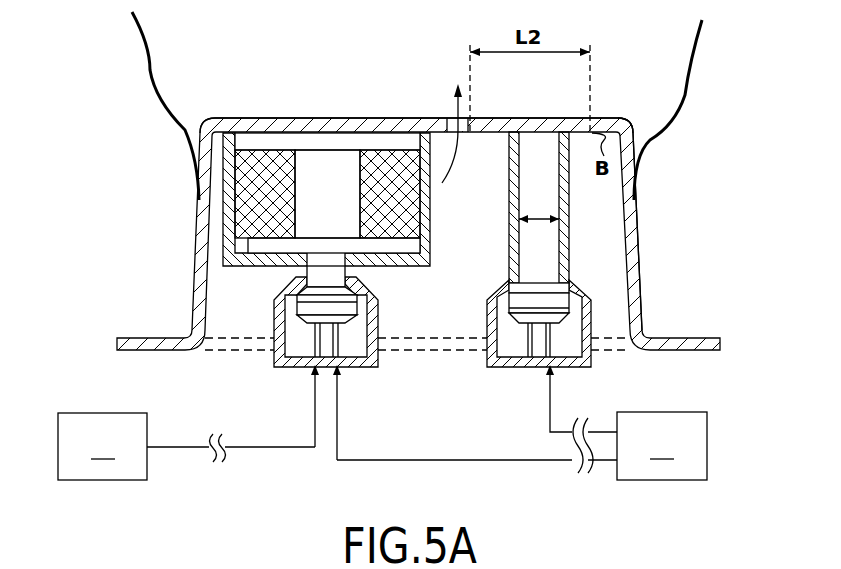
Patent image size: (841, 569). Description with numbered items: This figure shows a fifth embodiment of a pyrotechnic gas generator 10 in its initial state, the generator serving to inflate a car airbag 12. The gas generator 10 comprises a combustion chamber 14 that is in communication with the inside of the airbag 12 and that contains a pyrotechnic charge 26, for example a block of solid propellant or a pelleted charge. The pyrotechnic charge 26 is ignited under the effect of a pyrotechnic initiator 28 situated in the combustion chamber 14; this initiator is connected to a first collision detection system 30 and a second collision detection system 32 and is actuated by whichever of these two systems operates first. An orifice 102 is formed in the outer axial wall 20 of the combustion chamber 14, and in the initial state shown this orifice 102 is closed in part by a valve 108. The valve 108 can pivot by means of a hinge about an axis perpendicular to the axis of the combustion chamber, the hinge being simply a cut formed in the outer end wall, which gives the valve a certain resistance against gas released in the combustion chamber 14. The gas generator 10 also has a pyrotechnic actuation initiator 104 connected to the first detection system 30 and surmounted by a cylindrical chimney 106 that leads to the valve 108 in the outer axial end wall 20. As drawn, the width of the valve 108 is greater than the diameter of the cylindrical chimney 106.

The pyrotechnic gas generator 10 is at (612, 90).
The car airbag 12 is at (144, 42).
The combustion chamber 14 is at (227, 280).
The outer axial wall 20 is at (214, 112).
The pyrotechnic charge 26 is at (244, 196).
The pyrotechnic initiator 28 is at (307, 302).
The first collision detection system 30 is at (522, 422).
The second collision detection system 32 is at (186, 446).
The orifice 102 is at (451, 125).
The pyrotechnic actuation initiator 104 is at (558, 302).
The cylindrical chimney 106 is at (562, 196).
The valve 108 is at (520, 119).